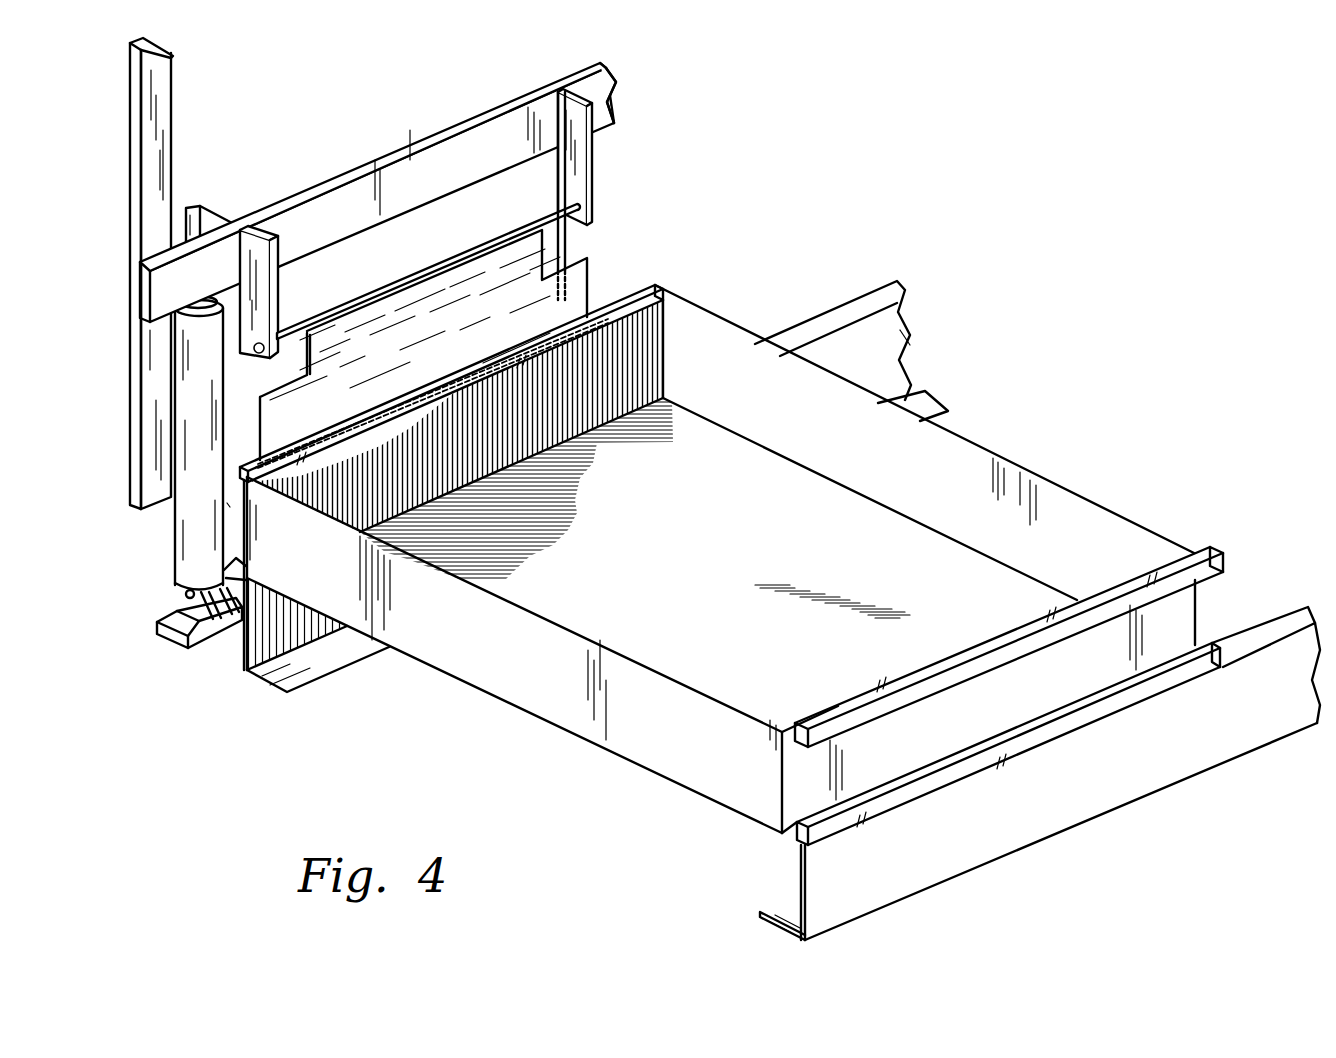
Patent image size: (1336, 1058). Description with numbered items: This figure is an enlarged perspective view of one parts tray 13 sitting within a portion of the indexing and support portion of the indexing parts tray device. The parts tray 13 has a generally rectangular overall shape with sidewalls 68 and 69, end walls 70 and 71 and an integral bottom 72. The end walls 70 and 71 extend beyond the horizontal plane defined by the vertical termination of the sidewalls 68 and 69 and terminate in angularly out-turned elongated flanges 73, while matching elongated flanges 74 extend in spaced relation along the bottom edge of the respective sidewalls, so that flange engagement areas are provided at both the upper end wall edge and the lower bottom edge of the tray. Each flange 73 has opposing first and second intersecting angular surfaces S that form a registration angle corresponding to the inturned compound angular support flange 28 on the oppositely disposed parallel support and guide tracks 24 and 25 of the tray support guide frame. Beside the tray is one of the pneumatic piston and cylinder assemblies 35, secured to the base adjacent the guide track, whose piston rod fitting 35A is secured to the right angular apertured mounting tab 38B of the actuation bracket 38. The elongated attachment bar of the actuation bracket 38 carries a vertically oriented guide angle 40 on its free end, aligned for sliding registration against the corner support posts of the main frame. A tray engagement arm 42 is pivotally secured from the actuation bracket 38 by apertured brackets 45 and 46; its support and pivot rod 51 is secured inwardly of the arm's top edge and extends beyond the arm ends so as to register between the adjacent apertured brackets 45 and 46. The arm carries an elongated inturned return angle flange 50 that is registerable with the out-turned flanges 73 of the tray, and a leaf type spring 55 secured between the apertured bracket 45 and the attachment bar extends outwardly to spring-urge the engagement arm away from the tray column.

The parts tray 13 is at (765, 565).
The support and guide track 24 is at (798, 882).
The support and guide track 25 is at (912, 340).
The compound angular support flange 28 is at (890, 297).
The pneumatic piston and cylinder assembly 35 is at (195, 562).
The piston rod fitting 35A is at (452, 163).
The actuation bracket 38 is at (620, 87).
The apertured mounting tab 38B is at (197, 226).
The guide angle 40 is at (150, 464).
The tray engagement arm 42 is at (580, 285).
The apertured bracket 45 is at (582, 178).
The apertured bracket 46 is at (262, 290).
The inturned return angle flange 50 is at (400, 405).
The support and pivot rod 51 is at (407, 280).
The leaf type spring 55 is at (566, 247).
The sidewall 68 is at (545, 680).
The sidewall 69 is at (968, 487).
The end wall 70 is at (543, 420).
The end wall 71 is at (802, 775).
The bottom 72 is at (788, 547).
The out-turned elongated flange 73 is at (643, 302).
The elongated flange 74 is at (883, 797).
The intersecting angular surfaces S is at (228, 504).